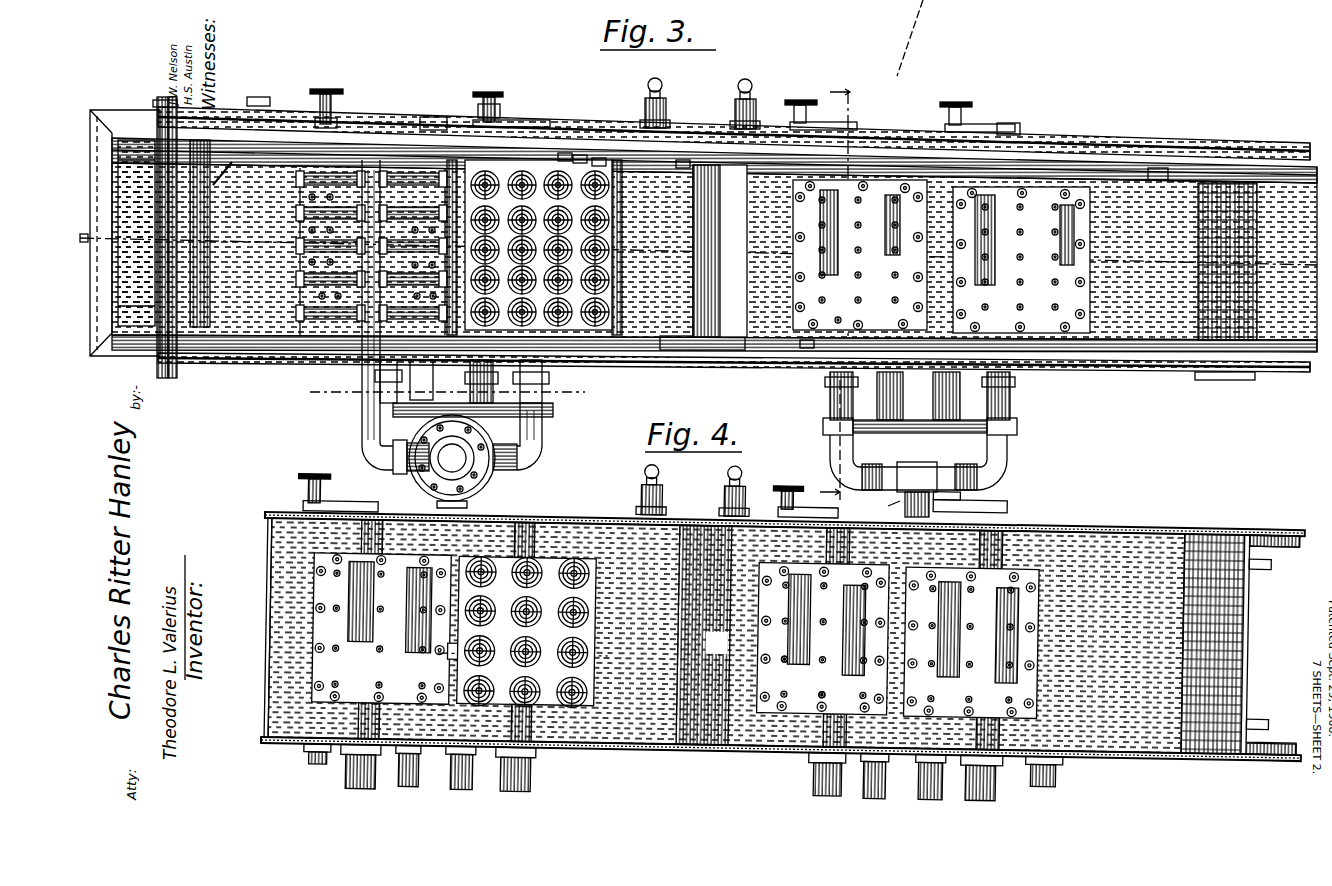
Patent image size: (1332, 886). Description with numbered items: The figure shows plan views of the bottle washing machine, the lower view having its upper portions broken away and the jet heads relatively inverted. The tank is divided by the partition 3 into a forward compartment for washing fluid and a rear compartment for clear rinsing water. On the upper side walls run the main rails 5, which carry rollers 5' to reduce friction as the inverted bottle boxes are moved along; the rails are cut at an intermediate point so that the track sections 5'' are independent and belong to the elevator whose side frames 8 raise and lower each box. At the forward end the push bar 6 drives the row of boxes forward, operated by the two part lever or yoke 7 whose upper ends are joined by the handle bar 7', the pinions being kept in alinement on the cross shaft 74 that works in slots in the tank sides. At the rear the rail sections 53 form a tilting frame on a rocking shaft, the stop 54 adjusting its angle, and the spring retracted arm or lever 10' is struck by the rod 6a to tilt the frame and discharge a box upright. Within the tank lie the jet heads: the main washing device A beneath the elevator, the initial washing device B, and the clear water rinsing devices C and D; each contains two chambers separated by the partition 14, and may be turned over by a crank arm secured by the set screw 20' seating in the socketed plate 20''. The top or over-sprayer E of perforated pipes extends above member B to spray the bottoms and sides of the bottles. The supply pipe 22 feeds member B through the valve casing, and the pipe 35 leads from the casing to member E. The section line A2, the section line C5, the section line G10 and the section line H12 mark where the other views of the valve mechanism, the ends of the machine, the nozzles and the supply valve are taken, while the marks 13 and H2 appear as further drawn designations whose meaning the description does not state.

In FIG. 3, the partition 3 is at (720, 251).
In FIG. 4, the partition 3 is at (704, 635).
In FIG. 3, the main rails 5 is at (745, 253).
In FIG. 3, the rollers 5' is at (703, 364).
In FIG. 3, the track sections 5'' is at (615, 138).
In FIG. 3, the rail sections 53 is at (1160, 170).
In FIG. 4, the stop 54 is at (1262, 548).
In FIG. 3, the push bar 6 is at (125, 233).
In FIG. 3, the rod 6a is at (1012, 392).
In FIG. 3, the two part lever or yoke 7 is at (211, 240).
In FIG. 3, the handle bar 7' is at (181, 247).
In FIG. 3, the cross shaft 74 is at (232, 162).
In FIG. 3, the side frames 8 is at (581, 155).
In FIG. 3, the spring retracted arm or lever 10' is at (1225, 389).
In FIG. 3, the bolt 13 is at (838, 317).
In FIG. 4, the partition 14 is at (823, 682).
In FIG. 3, the set screw 20' is at (511, 97).
In FIG. 3, the socketed plate 20'' is at (576, 127).
In FIG. 3, the supply pipe 22 is at (918, 444).
In FIG. 3, the pipe 35 is at (437, 461).
In FIG. 3, the main washing device A is at (505, 175).
In FIG. 4, the main washing device A is at (560, 560).
In FIG. 3, the section line A2— A2 is at (340, 400).
In FIG. 3, the initial washing device B is at (345, 195).
In FIG. 4, the initial washing device B is at (382, 628).
In FIG. 3, the clear water rinsing device C is at (860, 255).
In FIG. 4, the clear water rinsing device C is at (823, 639).
In FIG. 3, the section line C5— C5 is at (134, 233).
In FIG. 3, the clear water rinsing device D is at (1021, 260).
In FIG. 4, the clear water rinsing device D is at (972, 642).
In FIG. 3, the top or over-sprayer E is at (371, 246).
In FIG. 4, the section line G10— G10 is at (502, 651).
In FIG. 3, the left elbow pipe H2 is at (348, 467).
In FIG. 3, the section line H12— H12 is at (554, 467).